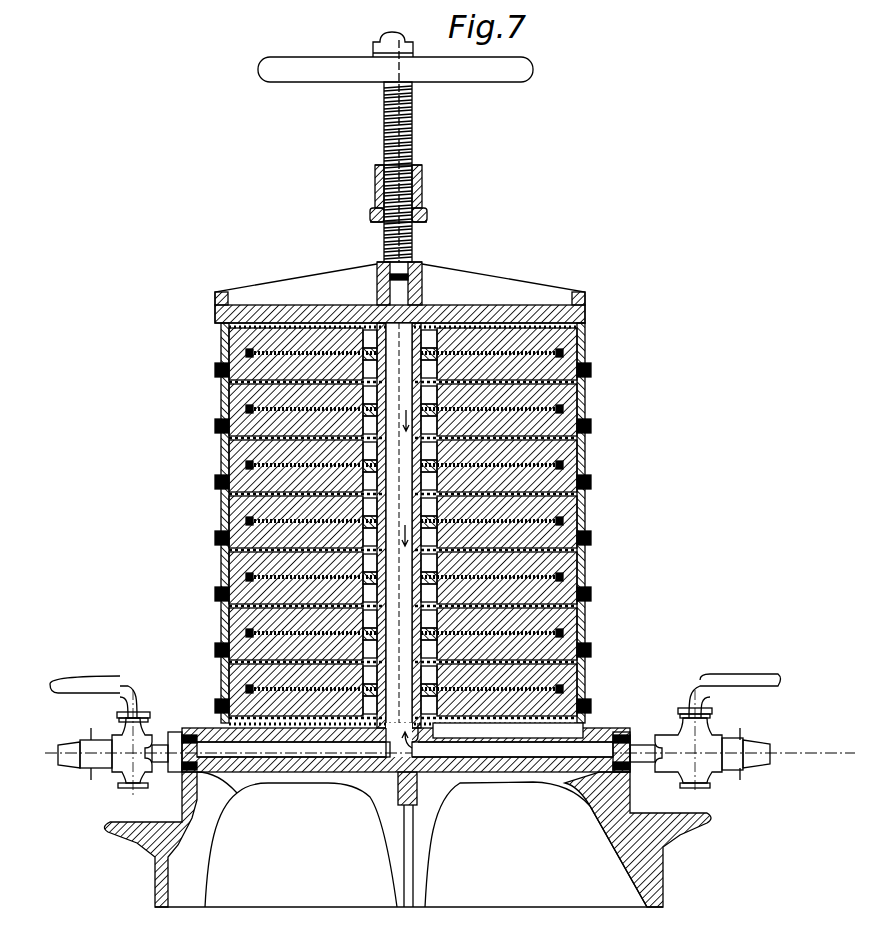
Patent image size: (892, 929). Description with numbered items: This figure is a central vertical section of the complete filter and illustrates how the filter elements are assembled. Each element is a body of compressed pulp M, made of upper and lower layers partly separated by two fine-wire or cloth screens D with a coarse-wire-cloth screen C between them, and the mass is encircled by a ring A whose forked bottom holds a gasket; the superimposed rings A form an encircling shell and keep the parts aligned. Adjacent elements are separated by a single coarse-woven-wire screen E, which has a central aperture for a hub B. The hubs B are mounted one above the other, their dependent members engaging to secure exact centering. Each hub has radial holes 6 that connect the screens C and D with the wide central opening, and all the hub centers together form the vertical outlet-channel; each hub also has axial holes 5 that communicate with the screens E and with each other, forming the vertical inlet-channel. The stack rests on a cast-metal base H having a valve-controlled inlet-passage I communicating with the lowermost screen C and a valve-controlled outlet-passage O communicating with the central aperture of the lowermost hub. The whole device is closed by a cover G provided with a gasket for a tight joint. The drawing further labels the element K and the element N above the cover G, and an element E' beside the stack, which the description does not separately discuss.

The screw spindle K is at (416, 120).
The nut N is at (428, 186).
The cover G is at (480, 285).
The ring A is at (583, 338).
The body of compressed pulp M is at (242, 342).
The hub B is at (399, 525).
The coarse-wire-cloth screen C is at (230, 523).
The coarse-woven-wire screen E is at (408, 607).
The filter element E' is at (429, 467).
The fine-wire or cloth circular screen D is at (543, 572).
The holes parallel with the hub axis 5 is at (590, 500).
The radial holes 6 is at (399, 525).
The valve-controlled outlet-passage O is at (205, 728).
The valve-controlled inlet-passage I is at (598, 740).
The base H is at (498, 773).